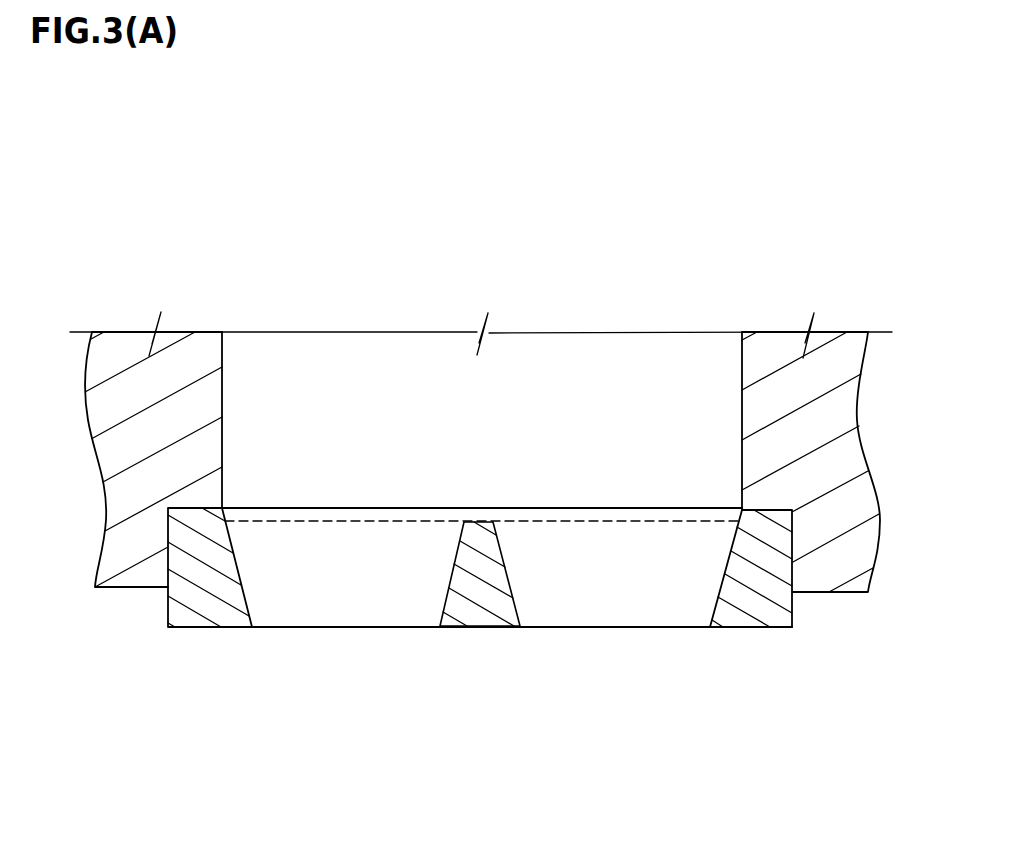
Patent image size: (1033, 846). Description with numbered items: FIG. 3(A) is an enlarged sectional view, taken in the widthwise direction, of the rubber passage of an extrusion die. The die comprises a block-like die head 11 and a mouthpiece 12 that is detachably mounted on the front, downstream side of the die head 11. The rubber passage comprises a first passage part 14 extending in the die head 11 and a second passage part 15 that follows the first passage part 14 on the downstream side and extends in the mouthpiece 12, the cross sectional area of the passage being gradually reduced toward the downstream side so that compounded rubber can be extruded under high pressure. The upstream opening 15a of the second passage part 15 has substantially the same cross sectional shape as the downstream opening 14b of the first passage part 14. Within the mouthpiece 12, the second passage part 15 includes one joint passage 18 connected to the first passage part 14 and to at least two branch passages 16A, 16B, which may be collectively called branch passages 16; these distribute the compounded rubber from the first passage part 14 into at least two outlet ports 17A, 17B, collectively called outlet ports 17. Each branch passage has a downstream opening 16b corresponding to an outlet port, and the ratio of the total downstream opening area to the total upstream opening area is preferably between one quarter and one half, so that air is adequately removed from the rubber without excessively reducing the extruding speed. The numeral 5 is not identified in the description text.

The slider 5 is at (578, 754).
The die head 11 is at (832, 560).
The mouthpiece 12 is at (747, 628).
The first passage part 14 is at (742, 412).
The downstream opening of the first passage part 14b is at (482, 369).
The second passage part 15 is at (670, 198).
The upstream opening of the second passage part 15a is at (325, 508).
The branch passages 16 is at (343, 372).
The branch passage 16A is at (390, 552).
The branch passage 16B is at (622, 545).
The downstream opening of the branch passages 16b is at (287, 521).
The outlet ports 17 is at (304, 635).
The outlet port 17A is at (348, 627).
The outlet port 17B is at (585, 627).
The joint passage 18 is at (487, 508).